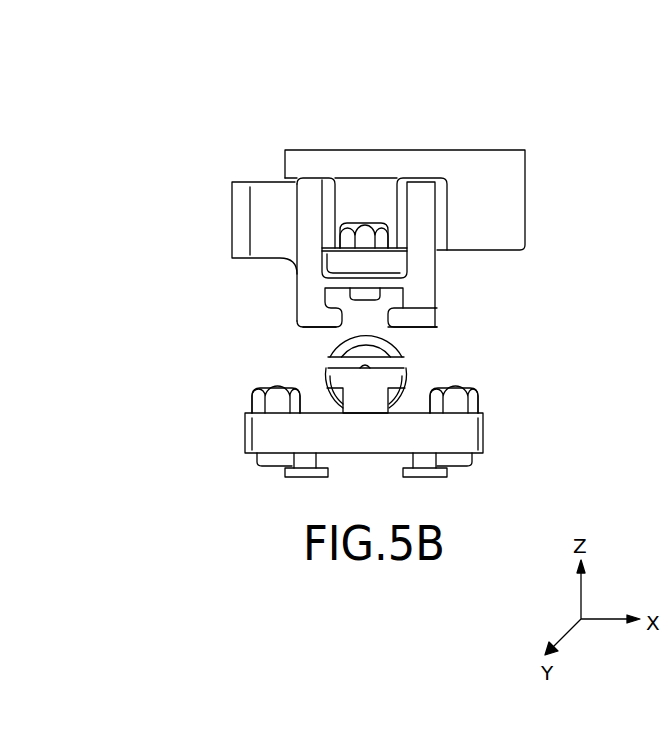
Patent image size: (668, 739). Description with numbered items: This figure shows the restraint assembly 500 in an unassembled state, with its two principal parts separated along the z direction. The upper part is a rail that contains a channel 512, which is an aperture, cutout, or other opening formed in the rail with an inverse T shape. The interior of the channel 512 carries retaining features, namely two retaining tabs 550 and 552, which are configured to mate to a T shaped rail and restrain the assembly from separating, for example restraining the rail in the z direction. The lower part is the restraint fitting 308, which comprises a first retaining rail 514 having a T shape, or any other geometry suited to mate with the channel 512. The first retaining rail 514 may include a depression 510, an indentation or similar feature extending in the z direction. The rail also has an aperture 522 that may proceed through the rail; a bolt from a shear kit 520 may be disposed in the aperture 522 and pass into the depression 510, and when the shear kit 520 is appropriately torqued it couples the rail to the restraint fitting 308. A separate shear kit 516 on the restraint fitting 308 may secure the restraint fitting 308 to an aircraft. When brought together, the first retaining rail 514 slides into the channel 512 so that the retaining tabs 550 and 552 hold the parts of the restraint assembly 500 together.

The restraint assembly 500 is at (243, 116).
The depression 510 is at (472, 175).
The shear kit 520 is at (370, 240).
The aperture 522 is at (392, 262).
The channel 512 is at (390, 293).
The retaining tab 552 is at (396, 328).
The retaining tab 550 is at (330, 317).
The first retaining rail 514 is at (405, 377).
The shear kit 516 is at (477, 407).
The restraint fitting 308 is at (455, 442).